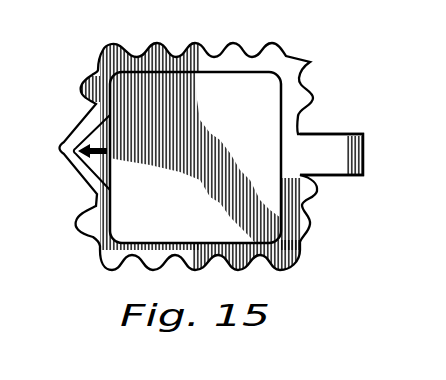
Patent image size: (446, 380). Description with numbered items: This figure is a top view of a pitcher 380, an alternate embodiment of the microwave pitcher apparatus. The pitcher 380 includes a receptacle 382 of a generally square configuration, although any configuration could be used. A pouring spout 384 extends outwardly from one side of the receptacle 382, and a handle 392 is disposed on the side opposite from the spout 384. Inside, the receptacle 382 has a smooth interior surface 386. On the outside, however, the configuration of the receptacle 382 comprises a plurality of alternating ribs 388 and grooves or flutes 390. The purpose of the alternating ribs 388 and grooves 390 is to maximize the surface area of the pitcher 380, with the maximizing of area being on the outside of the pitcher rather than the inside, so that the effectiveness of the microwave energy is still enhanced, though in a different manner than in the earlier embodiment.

The pitcher 380 is at (210, 38).
The receptacle 382 is at (148, 54).
The pouring spout 384 is at (80, 143).
The smooth interior surface 386 is at (222, 73).
The ribs 388 is at (277, 60).
The grooves or flutes 390 is at (178, 258).
The handle 392 is at (342, 152).